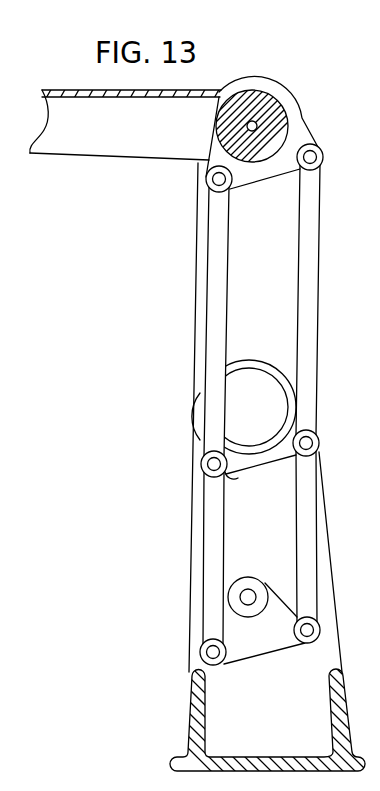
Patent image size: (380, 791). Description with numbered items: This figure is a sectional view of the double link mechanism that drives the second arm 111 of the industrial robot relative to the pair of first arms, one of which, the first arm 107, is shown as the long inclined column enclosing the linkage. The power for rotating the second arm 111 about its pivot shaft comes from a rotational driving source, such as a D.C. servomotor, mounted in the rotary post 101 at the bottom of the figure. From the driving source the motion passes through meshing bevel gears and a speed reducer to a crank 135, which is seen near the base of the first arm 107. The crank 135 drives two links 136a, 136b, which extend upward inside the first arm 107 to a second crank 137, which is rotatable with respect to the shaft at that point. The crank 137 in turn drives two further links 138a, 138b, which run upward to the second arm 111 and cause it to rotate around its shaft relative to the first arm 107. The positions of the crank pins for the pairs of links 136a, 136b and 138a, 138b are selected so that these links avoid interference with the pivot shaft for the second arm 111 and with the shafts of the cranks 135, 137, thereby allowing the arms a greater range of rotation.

The rotary post 101 is at (190, 728).
The first arm 107 is at (194, 353).
The second arm 111 is at (110, 158).
The crank 135 is at (255, 662).
The link 136a is at (208, 570).
The link 136b is at (298, 562).
The crank 137 is at (237, 475).
The link 138a is at (300, 263).
The link 138b is at (210, 292).